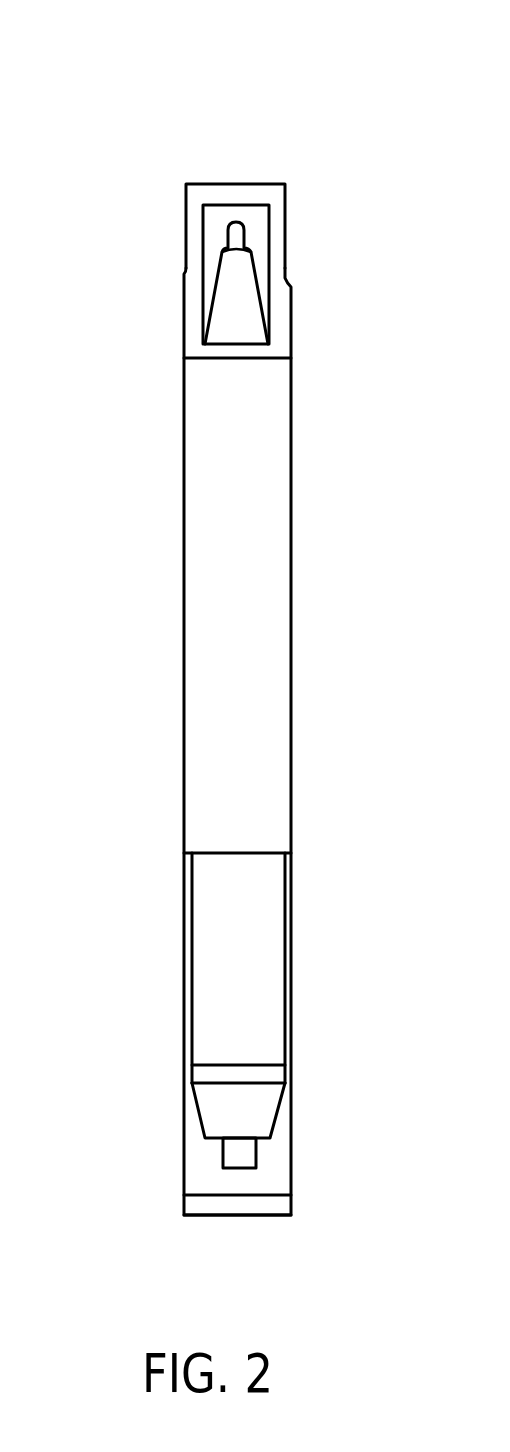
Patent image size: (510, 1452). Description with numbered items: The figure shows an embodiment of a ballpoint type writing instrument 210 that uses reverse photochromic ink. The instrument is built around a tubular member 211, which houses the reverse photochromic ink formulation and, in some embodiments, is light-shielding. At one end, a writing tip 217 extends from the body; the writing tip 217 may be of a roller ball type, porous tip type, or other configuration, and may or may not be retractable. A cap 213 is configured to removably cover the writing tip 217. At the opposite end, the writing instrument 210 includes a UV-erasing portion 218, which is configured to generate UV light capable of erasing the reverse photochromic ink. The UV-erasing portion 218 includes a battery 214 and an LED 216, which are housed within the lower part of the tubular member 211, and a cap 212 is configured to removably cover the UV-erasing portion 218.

The writing instrument 210 is at (133, 167).
The tubular member 211 is at (184, 740).
The cap 212 is at (218, 1216).
The cap 213 is at (242, 184).
The battery 214 is at (267, 948).
The LED 216 is at (223, 1152).
The writing tip 217 is at (215, 267).
The UV-erasing portion 218 is at (185, 972).